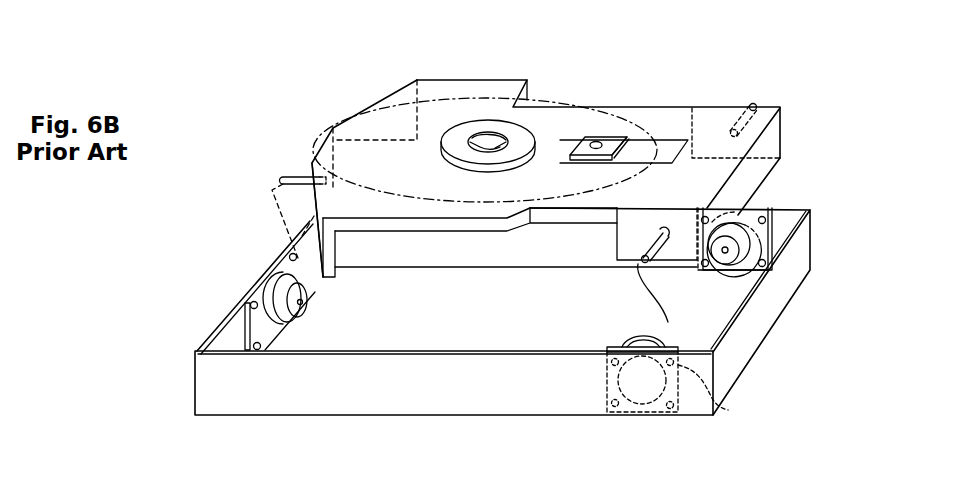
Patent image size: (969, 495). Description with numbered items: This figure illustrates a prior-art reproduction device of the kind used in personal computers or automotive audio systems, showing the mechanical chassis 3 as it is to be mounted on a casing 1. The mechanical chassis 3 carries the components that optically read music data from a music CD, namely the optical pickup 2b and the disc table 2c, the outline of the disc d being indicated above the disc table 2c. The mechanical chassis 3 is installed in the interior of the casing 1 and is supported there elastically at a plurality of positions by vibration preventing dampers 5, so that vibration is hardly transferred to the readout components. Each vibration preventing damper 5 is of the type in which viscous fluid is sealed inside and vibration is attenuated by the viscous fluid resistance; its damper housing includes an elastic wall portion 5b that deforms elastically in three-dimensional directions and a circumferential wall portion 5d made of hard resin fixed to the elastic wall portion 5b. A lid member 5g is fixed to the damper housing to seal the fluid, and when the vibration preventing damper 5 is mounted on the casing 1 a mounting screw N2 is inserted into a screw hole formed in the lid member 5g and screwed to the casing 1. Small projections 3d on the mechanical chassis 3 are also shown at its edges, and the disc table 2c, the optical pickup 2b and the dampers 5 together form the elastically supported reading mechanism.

The casing 1 is at (443, 415).
The mechanical chassis 3 is at (704, 107).
The pin 3d is at (290, 176).
The disc d is at (445, 98).
The disc table 2c is at (540, 134).
The optical pickup 2b is at (612, 134).
The vibration preventing damper 5 is at (312, 312).
The elastic wall portion 5b is at (306, 352).
The circumferential wall portion 5d is at (280, 276).
The lid member 5g is at (238, 324).
The mounting screw N2 is at (291, 255).